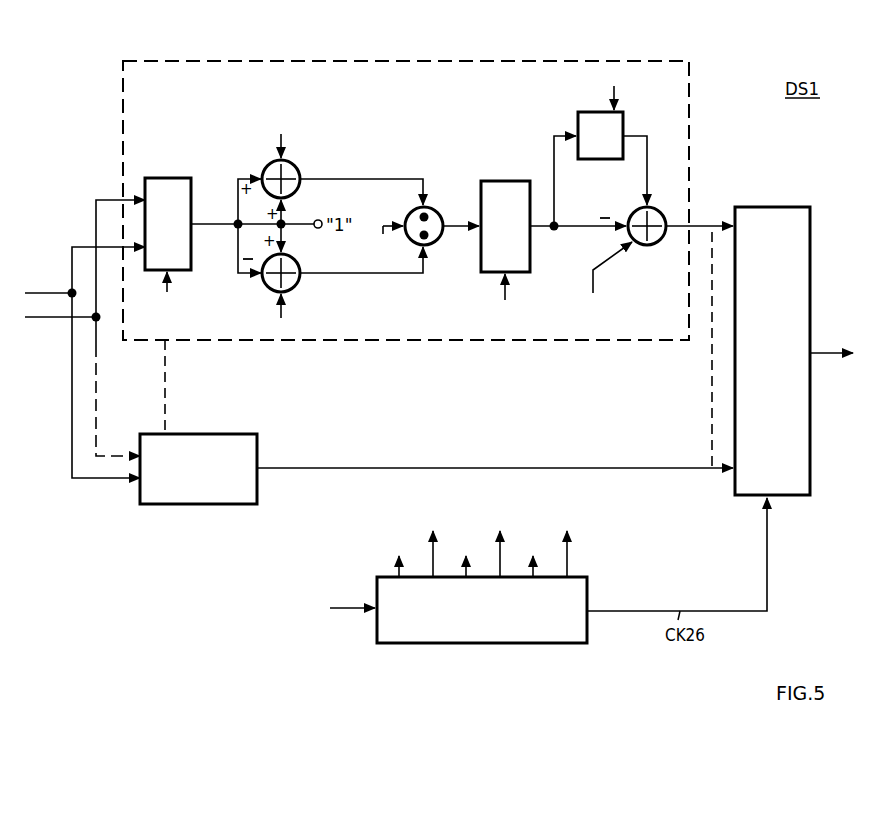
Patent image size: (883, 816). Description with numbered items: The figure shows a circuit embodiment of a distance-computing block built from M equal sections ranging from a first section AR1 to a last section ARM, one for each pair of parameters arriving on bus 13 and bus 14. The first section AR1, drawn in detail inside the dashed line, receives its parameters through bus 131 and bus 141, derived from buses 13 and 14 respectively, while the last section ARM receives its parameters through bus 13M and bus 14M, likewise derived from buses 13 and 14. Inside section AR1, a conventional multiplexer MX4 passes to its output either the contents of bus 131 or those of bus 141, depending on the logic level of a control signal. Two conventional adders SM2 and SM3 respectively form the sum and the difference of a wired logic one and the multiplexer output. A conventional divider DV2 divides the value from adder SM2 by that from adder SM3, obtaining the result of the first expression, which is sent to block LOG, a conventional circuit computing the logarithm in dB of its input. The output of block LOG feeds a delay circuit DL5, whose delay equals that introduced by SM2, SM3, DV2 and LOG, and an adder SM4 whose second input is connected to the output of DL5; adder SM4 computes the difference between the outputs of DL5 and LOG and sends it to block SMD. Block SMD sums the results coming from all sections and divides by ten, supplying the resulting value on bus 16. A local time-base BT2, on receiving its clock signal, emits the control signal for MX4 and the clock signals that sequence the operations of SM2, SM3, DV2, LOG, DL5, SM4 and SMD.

The bus 13 is at (42, 320).
The bus 14 is at (41, 293).
The bus 131 is at (106, 200).
The bus 141 is at (80, 247).
The bus 13M is at (106, 455).
The bus 14M is at (96, 481).
The bus 16 is at (845, 354).
The section AR1 is at (122, 68).
The section ARM is at (257, 447).
The multiplexer MX4 is at (166, 178).
The adder SM2 is at (296, 168).
The adder SM3 is at (296, 287).
The divider DV2 is at (442, 207).
The logarithm computing circuit LOG is at (502, 180).
The delay circuit DL5 is at (600, 160).
The adder SM4 is at (622, 256).
The summation block SMD is at (810, 443).
The local time-base BT2 is at (470, 643).